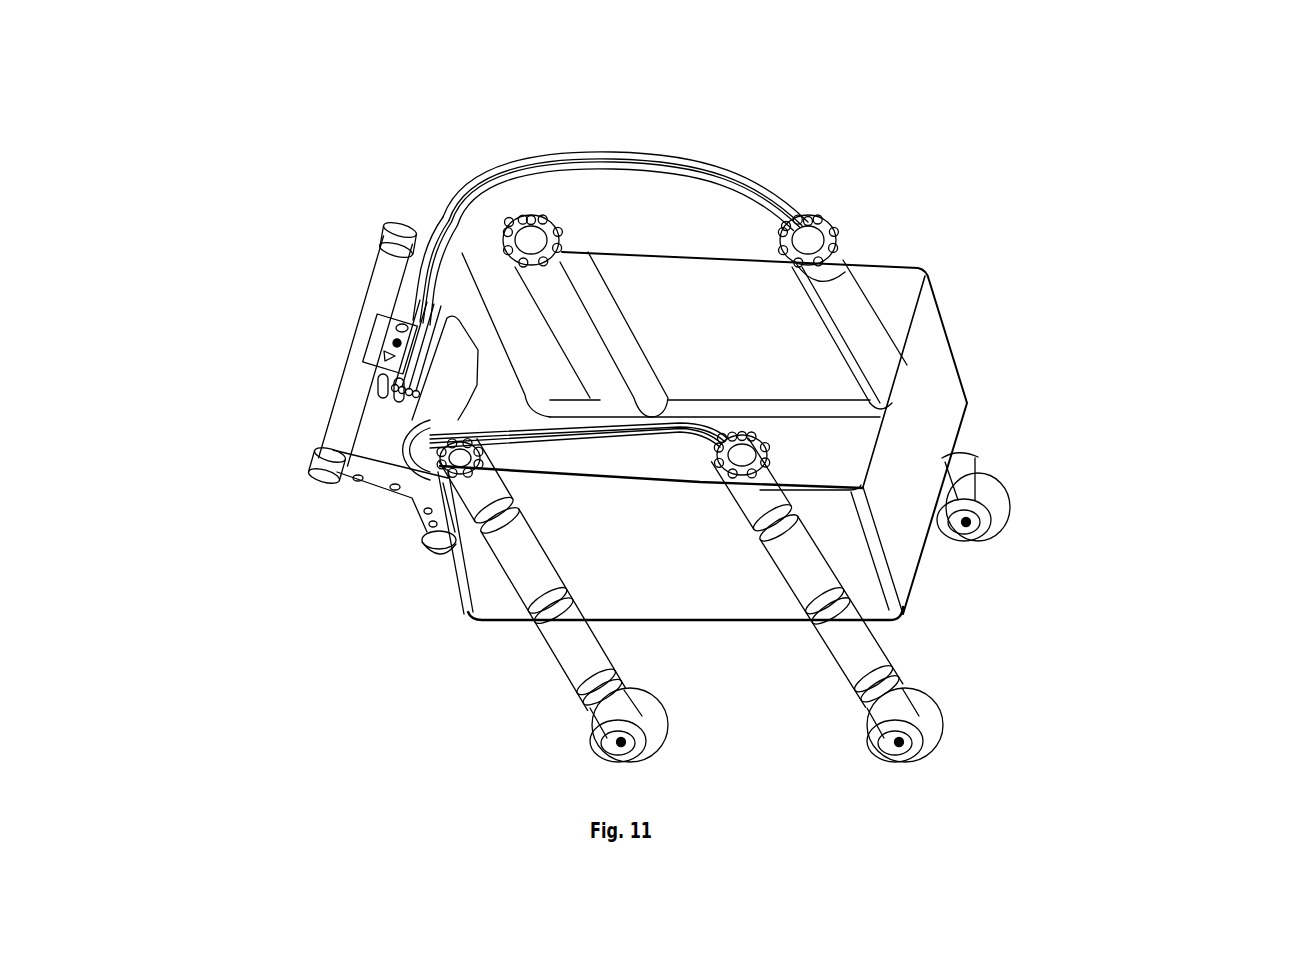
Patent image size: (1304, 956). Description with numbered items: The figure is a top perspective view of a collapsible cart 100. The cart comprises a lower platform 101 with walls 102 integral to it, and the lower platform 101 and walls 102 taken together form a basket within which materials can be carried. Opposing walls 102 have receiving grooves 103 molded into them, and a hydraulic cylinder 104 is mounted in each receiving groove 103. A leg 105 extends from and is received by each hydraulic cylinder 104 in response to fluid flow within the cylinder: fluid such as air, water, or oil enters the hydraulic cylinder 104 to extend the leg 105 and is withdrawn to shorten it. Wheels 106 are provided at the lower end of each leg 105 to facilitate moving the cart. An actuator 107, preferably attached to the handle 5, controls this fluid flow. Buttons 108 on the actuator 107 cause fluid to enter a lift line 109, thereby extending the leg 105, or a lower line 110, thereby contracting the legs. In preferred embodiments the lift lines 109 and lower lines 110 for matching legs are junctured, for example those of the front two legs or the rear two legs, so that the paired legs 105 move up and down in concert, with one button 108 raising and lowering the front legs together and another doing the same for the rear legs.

The handle 5 is at (333, 430).
The collapsible cart 100 is at (1086, 465).
The lower platform 101 is at (836, 478).
The walls 102 is at (913, 440).
The receiving grooves 103 is at (803, 297).
The hydraulic cylinder 104 is at (577, 227).
The leg 105 is at (556, 656).
The wheels 106 is at (1012, 515).
The actuator 107 is at (393, 342).
The buttons 108 is at (400, 335).
The lift line 109 is at (530, 212).
The lower line 110 is at (443, 213).